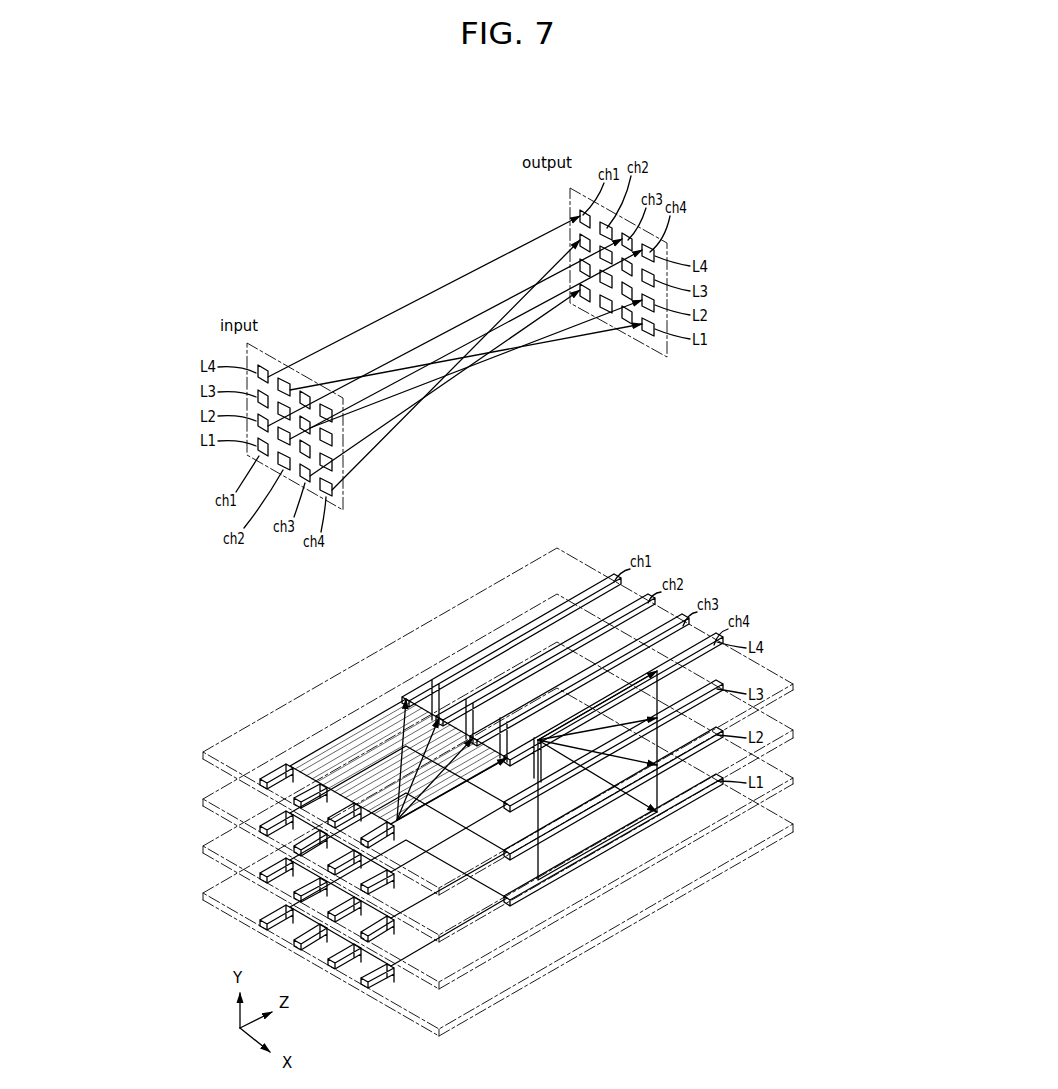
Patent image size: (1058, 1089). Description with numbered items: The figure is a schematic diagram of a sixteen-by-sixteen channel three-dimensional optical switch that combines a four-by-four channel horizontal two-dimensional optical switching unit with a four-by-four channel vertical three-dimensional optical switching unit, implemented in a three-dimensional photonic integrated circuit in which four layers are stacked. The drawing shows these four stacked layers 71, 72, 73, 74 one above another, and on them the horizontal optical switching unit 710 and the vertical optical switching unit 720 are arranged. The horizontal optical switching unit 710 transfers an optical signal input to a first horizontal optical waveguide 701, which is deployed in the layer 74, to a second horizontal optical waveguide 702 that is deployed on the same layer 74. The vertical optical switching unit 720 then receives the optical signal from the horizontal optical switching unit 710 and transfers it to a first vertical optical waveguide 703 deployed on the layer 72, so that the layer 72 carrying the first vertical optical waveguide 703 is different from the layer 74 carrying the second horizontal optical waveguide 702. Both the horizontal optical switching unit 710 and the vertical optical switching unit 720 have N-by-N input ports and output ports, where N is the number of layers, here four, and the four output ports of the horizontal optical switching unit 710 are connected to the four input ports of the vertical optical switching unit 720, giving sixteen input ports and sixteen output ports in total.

The layer 71 is at (793, 826).
The layer 72 is at (793, 780).
The layer 73 is at (793, 733).
The layer 74 is at (793, 687).
The first horizontal optical waveguide 701 is at (257, 787).
The second horizontal optical waveguide 702 is at (257, 832).
The first vertical optical waveguide 703 is at (257, 877).
The horizontal optical switching unit 710 is at (423, 665).
The vertical optical switching unit 720 is at (603, 557).